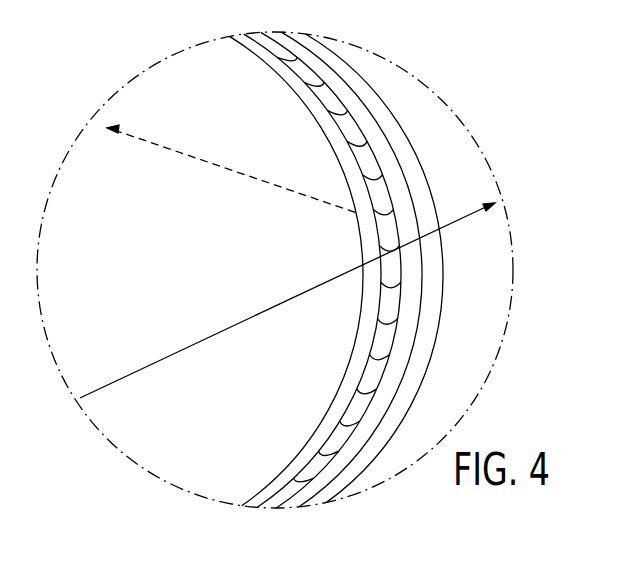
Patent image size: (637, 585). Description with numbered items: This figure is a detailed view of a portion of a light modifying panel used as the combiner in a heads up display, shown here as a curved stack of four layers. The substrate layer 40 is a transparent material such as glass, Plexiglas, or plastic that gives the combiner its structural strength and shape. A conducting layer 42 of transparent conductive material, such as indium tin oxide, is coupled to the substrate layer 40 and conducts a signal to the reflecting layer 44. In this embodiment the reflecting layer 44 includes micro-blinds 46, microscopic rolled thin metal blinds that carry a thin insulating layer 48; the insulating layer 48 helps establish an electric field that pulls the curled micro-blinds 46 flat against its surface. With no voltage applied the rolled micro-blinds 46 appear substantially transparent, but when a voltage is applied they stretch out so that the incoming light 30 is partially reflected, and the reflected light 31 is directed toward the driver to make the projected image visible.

The light 30 is at (164, 360).
The reflected light 31 is at (188, 157).
The substrate layer 40 is at (363, 463).
The conducting layer 42 is at (320, 487).
The reflecting layer 44 is at (308, 478).
The micro-blinds 46 is at (383, 336).
The insulating layer 48 is at (282, 490).